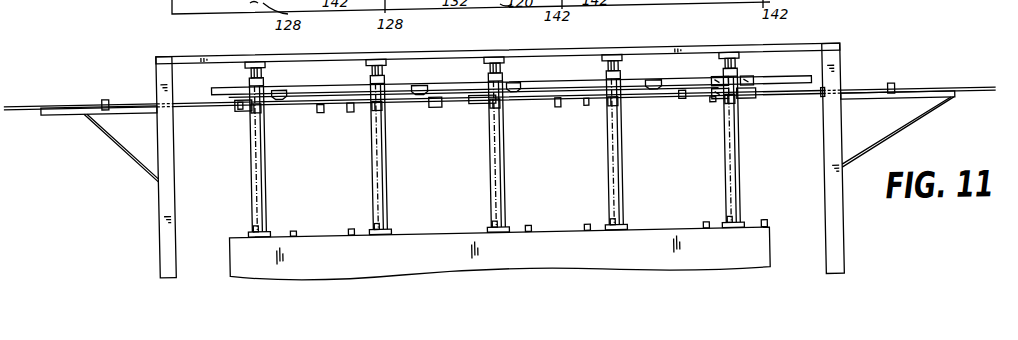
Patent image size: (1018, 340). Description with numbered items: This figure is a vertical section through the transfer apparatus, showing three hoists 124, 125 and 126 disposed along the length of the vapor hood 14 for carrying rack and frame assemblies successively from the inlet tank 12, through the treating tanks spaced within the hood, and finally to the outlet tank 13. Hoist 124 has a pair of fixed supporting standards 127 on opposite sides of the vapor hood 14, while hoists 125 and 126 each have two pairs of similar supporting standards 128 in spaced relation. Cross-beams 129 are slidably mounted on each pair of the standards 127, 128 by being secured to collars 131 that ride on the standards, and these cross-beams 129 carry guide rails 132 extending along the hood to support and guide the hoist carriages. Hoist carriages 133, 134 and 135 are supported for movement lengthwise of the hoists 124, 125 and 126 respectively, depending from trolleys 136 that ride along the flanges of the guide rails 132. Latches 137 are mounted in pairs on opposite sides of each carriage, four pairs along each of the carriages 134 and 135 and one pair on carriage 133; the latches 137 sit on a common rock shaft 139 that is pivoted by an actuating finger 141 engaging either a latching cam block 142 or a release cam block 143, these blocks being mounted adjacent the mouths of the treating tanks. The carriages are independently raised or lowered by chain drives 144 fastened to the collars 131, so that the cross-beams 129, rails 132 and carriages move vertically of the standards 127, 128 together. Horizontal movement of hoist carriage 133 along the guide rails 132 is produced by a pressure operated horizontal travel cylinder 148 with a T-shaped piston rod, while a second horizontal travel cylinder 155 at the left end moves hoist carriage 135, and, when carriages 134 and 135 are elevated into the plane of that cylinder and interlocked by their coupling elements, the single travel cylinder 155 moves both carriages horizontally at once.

The inlet tank 12 is at (810, 265).
The outlet tank 13 is at (212, 257).
The vapor hood 14 is at (806, 49).
The hoist 124 is at (722, 195).
The hoist 125 is at (623, 205).
The hoist 126 is at (388, 200).
The fixed supporting standards 127 is at (738, 158).
The supporting standards 128 is at (268, 166).
The cross-beams 129 is at (253, 78).
The collars 131 is at (268, 80).
The guide rails 132 is at (448, 86).
The hoist carriage 133 is at (742, 98).
The hoist carriage 134 is at (543, 99).
The hoist carriage 135 is at (290, 97).
The trolleys 136 is at (277, 101).
The latches 137 is at (257, 101).
The rock shaft 139 is at (424, 94).
The actuating finger 141 is at (352, 109).
The latching cam block 142 is at (349, 226).
The release cam block 143 is at (292, 228).
The chain drives 144 is at (252, 150).
The horizontal travel cylinder 148 is at (882, 96).
The second horizontal travel cylinder 155 is at (128, 98).